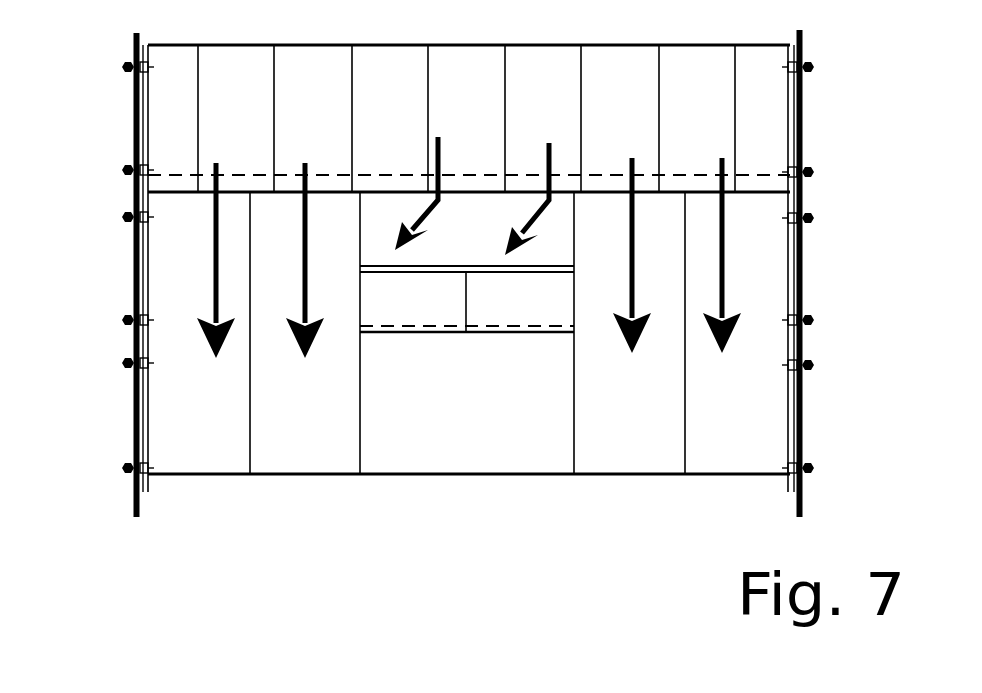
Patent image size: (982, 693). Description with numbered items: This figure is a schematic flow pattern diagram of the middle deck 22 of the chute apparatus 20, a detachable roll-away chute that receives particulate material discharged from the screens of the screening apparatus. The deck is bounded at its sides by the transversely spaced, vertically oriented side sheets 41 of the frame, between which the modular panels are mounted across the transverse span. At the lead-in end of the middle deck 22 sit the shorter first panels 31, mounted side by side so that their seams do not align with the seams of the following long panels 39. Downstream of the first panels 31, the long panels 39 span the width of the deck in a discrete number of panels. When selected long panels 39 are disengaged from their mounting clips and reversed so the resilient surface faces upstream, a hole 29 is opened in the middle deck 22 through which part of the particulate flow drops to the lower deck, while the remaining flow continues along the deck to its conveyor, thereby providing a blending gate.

The chute apparatus 20 is at (433, 545).
The middle deck 22 is at (493, 547).
The hole 29 is at (471, 245).
The first panels 31 is at (397, 67).
The long panels 39 is at (315, 462).
The side sheets 41 is at (135, 128).